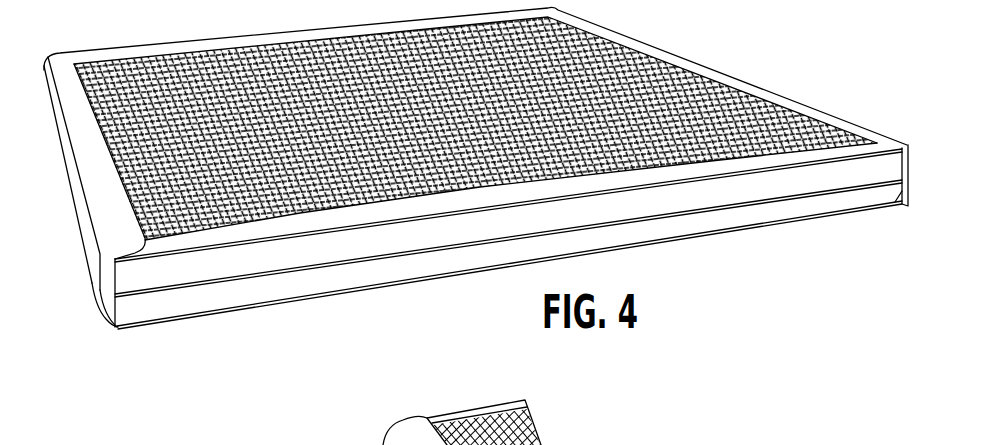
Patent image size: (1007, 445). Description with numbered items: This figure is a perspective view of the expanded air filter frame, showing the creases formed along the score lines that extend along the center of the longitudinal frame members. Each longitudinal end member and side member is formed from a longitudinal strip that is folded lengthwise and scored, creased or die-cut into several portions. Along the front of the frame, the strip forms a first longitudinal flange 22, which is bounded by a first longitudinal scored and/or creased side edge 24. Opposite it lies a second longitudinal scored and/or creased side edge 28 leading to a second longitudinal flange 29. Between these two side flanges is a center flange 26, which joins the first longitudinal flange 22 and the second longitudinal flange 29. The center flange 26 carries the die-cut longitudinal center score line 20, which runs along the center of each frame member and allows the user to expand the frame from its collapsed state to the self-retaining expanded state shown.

The longitudinal center score line 20 is at (703, 208).
The first longitudinal flange 22 is at (780, 153).
The first longitudinal scored side edge 24 is at (827, 163).
The center flange 26 is at (432, 270).
The second longitudinal scored side edge 28 is at (222, 308).
The second longitudinal flange 29 is at (118, 328).